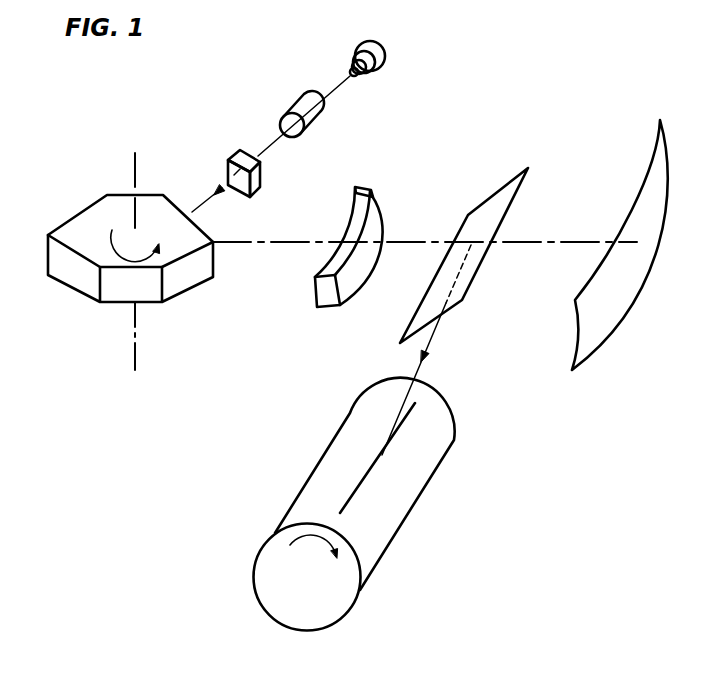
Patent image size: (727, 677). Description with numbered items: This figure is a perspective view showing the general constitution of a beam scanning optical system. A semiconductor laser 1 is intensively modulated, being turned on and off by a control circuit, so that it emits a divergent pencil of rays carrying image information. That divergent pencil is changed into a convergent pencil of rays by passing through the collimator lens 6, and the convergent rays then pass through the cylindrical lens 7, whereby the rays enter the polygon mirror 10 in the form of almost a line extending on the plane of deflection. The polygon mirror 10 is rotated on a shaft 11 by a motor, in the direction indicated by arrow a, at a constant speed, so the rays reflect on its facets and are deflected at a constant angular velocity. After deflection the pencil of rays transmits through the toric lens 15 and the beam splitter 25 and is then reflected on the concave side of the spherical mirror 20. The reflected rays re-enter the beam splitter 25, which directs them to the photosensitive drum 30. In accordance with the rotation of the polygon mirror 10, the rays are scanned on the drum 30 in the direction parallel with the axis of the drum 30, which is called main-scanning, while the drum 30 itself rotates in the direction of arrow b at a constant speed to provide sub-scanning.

The semiconductor laser 1 is at (379, 43).
The collimator lens 6 is at (297, 100).
The cylindrical lens 7 is at (232, 153).
The polygon mirror 10 is at (72, 290).
The shaft 11 is at (137, 165).
The toric lens 15 is at (380, 200).
The spherical mirror 20 is at (633, 200).
The beam splitter 25 is at (508, 182).
The photosensitive drum 30 is at (420, 503).